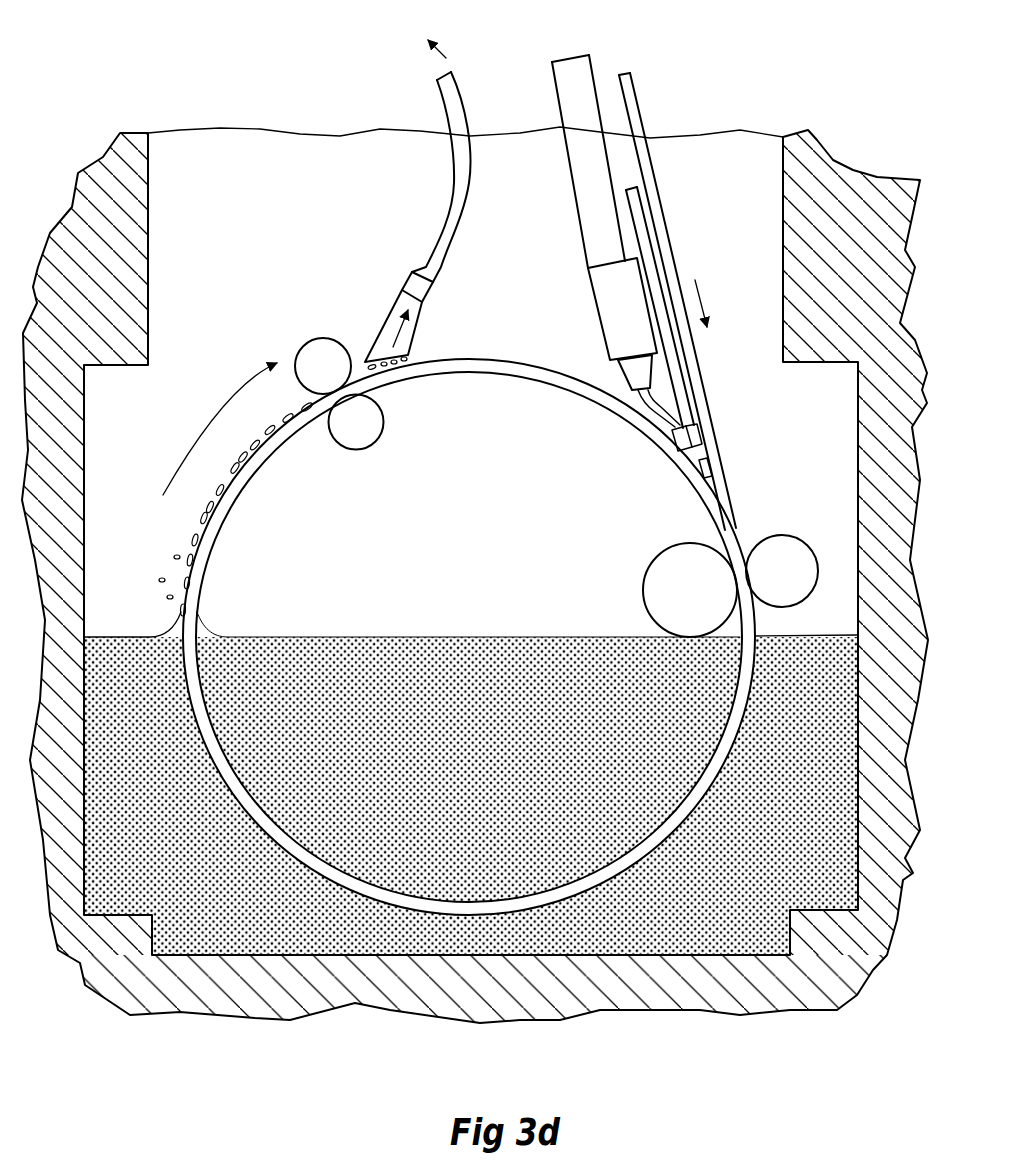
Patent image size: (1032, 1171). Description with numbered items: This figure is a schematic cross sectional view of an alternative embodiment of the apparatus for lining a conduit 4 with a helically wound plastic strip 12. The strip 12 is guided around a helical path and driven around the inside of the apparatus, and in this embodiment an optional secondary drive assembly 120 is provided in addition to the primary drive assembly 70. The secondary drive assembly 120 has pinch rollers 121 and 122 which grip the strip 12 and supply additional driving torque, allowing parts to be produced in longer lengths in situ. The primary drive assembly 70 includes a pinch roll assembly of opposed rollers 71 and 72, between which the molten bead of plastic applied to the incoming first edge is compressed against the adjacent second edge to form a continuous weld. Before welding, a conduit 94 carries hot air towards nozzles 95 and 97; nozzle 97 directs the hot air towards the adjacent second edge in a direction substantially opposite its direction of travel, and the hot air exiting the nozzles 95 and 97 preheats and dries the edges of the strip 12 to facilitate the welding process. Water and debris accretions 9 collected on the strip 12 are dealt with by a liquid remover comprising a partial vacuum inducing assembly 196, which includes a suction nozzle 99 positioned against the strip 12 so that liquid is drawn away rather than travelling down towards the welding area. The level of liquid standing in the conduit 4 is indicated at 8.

The conduit 4 is at (726, 883).
The liquid surface level 8 is at (135, 637).
The water and debris (accretions) 9 is at (272, 393).
The strip 12 is at (650, 155).
The primary drive assembly 70 is at (721, 524).
The roller 71 is at (797, 557).
The roller 72 is at (665, 583).
The conduit 94 is at (632, 203).
The nozzle 95 is at (700, 433).
The nozzle 97 is at (673, 437).
The suction nozzle 99 is at (385, 322).
The secondary drive assembly 120 is at (362, 338).
The pinch roller 121 is at (318, 365).
The pinch roller 122 is at (362, 418).
The partial vacuum inducing assembly 196 is at (424, 230).